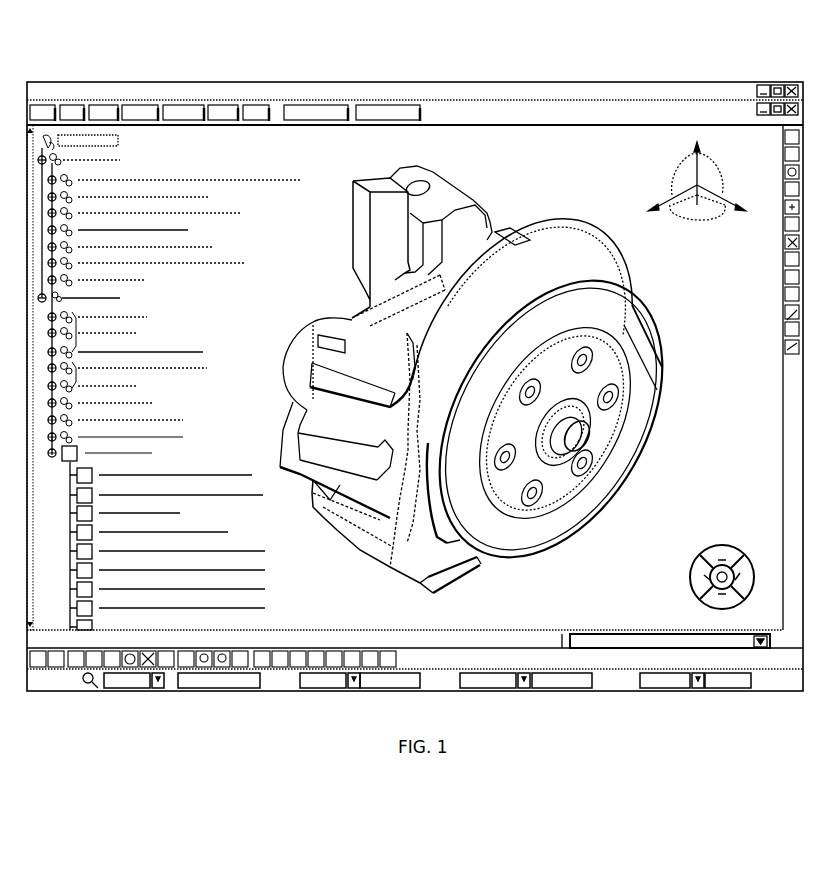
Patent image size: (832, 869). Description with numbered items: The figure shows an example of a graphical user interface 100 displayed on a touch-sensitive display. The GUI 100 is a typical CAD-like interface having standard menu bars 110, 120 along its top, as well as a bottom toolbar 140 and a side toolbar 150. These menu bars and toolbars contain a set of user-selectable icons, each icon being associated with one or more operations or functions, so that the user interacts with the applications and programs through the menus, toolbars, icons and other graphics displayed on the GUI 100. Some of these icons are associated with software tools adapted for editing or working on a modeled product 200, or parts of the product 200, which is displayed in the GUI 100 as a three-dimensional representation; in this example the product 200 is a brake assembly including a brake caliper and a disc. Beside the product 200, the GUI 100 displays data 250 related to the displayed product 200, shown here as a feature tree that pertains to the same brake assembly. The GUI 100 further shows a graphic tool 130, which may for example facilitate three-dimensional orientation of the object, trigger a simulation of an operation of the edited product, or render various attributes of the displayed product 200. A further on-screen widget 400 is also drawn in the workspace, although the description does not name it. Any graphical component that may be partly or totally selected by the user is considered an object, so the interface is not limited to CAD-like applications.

The menu bar 110 is at (508, 82).
The menu bar 120 is at (584, 118).
The graphic tool 130 is at (708, 214).
The bottom toolbar 140 is at (424, 632).
The side toolbar 150 is at (790, 374).
The modeled product 200 is at (372, 320).
The data 250 is at (138, 360).
The navigation compass widget 400 is at (715, 545).
The graphical user interface 100 is at (638, 567).